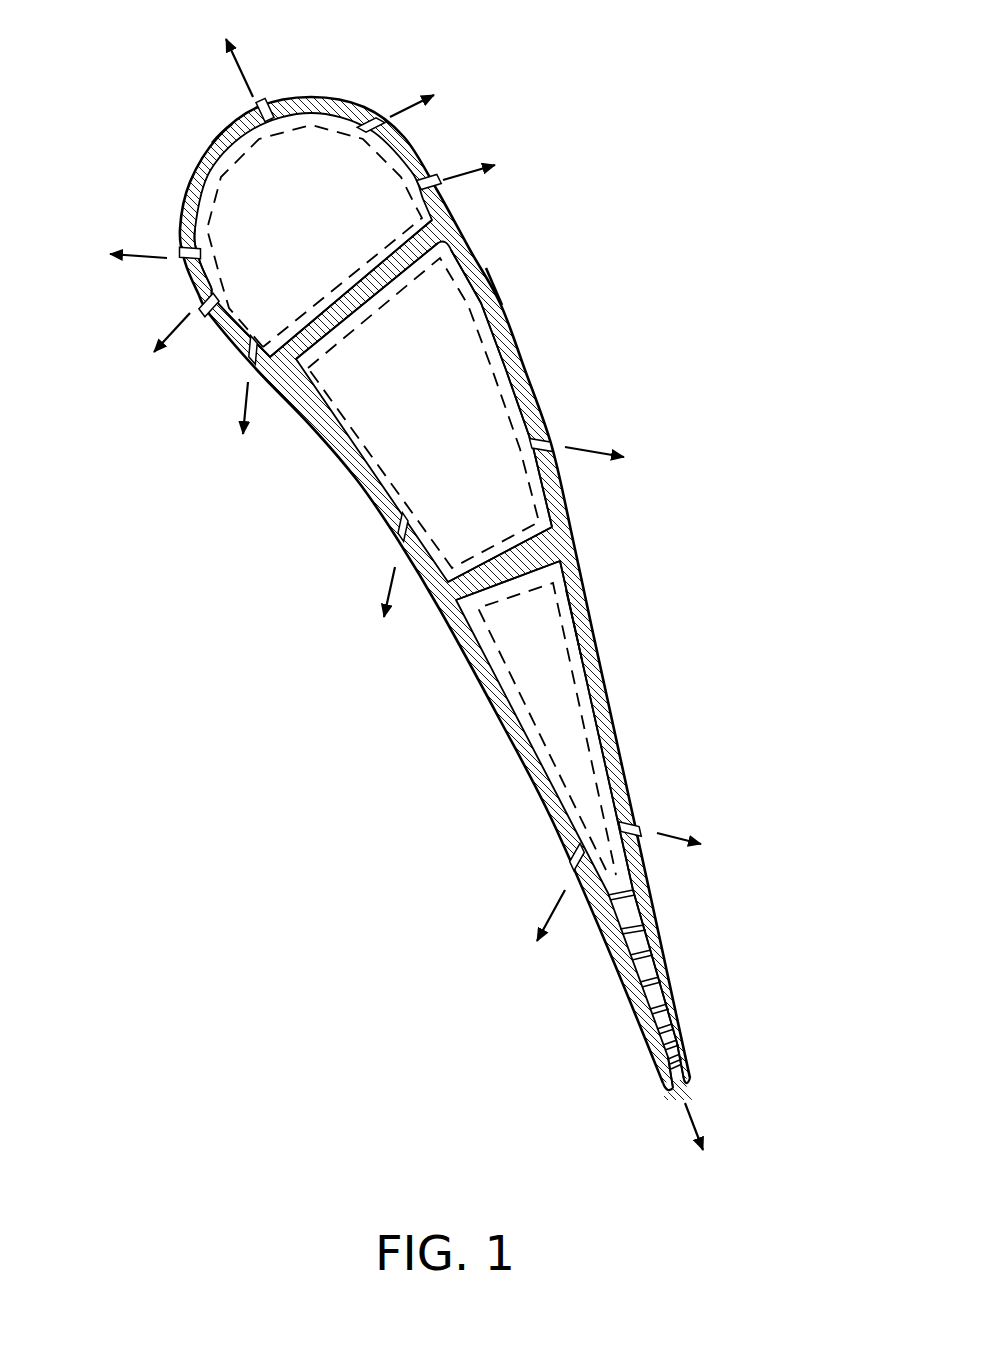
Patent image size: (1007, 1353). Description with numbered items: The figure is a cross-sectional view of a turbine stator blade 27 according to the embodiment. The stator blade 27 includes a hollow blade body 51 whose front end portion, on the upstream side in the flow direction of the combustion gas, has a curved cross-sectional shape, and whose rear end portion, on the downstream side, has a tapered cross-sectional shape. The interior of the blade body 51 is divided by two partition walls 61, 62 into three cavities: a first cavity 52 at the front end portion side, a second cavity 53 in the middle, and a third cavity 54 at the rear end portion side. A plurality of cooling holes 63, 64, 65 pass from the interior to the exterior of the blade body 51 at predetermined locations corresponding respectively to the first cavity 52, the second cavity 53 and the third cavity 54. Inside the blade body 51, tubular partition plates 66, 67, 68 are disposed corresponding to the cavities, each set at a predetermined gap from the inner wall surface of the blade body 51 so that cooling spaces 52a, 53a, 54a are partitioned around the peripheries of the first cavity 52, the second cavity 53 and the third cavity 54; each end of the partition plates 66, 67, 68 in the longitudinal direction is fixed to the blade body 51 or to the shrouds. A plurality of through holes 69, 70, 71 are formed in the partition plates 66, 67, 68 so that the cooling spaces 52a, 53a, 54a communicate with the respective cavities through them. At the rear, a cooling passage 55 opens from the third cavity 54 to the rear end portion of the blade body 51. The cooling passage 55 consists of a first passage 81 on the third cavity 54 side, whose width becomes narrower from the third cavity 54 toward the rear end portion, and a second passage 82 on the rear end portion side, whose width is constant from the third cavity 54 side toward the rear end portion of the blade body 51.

The stator blade 27 is at (606, 338).
The blade body 51 is at (197, 177).
The first cavity 52 is at (313, 235).
The cooling space 52a is at (212, 300).
The second cavity 53 is at (424, 412).
The cooling space 53a is at (555, 467).
The third cavity 54 is at (570, 824).
The cooling space 54a is at (597, 763).
The cooling passage 55 is at (662, 960).
The partition wall 61 is at (368, 268).
The partition wall 62 is at (500, 583).
The cooling holes 63 is at (260, 108).
The cooling holes 64 is at (548, 438).
The cooling holes 65 is at (640, 828).
The partition plate 66 is at (227, 127).
The partition plate 67 is at (493, 280).
The partition plate 68 is at (567, 637).
The through holes 69 is at (300, 127).
The through holes 70 is at (523, 357).
The through holes 71 is at (572, 685).
The first passage 81 is at (630, 912).
The second passage 82 is at (688, 1064).